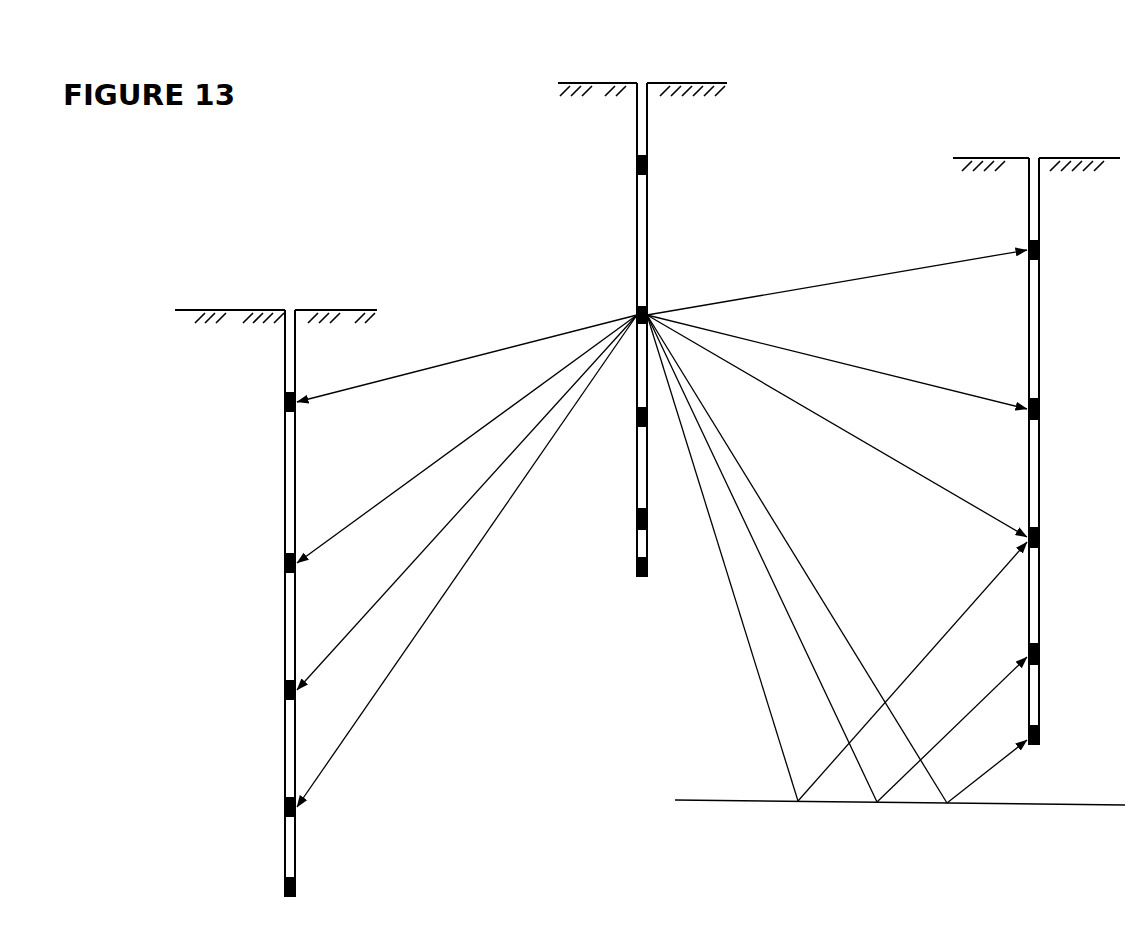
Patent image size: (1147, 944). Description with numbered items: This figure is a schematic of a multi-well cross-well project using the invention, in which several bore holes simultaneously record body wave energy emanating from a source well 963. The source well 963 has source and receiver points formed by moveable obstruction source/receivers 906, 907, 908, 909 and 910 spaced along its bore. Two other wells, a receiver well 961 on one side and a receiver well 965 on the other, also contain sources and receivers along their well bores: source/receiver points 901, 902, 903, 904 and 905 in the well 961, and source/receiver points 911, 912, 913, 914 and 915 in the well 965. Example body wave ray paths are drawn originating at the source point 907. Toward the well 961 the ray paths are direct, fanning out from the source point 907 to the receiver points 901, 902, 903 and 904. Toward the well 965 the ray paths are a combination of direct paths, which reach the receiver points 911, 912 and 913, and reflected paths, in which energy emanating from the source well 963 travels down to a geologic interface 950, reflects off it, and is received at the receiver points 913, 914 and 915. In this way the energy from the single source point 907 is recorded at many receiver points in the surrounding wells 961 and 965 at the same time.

The source/receiver point 901 is at (262, 404).
The source/receiver point 902 is at (262, 566).
The source/receiver point 903 is at (256, 692).
The source/receiver point 904 is at (256, 809).
The source/receiver point 905 is at (256, 889).
The moveable obstruction source/receiver 906 is at (613, 167).
The moveable obstruction source/receiver 907 is at (612, 311).
The moveable obstruction source/receiver 908 is at (612, 419).
The moveable obstruction source/receiver 909 is at (612, 522).
The moveable obstruction source/receiver 910 is at (612, 569).
The source/receiver point 911 is at (1061, 247).
The source/receiver point 912 is at (1061, 407).
The source/receiver point 913 is at (1061, 535).
The source/receiver point 914 is at (1060, 651).
The source/receiver point 915 is at (1060, 738).
The geologic interface 950 is at (672, 800).
The receiver well 961 is at (285, 305).
The source well 963 is at (636, 78).
The receiver well 965 is at (1029, 153).